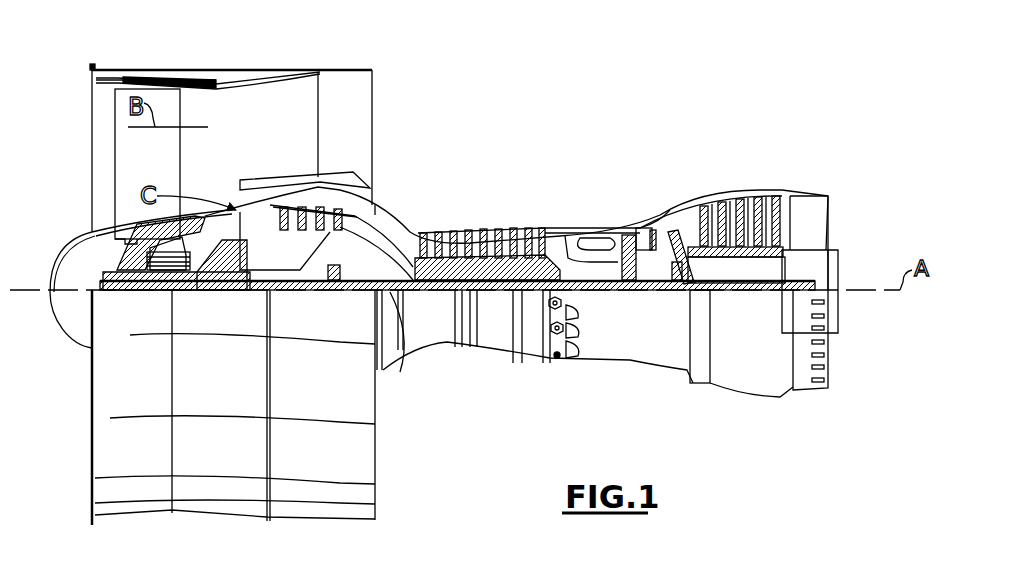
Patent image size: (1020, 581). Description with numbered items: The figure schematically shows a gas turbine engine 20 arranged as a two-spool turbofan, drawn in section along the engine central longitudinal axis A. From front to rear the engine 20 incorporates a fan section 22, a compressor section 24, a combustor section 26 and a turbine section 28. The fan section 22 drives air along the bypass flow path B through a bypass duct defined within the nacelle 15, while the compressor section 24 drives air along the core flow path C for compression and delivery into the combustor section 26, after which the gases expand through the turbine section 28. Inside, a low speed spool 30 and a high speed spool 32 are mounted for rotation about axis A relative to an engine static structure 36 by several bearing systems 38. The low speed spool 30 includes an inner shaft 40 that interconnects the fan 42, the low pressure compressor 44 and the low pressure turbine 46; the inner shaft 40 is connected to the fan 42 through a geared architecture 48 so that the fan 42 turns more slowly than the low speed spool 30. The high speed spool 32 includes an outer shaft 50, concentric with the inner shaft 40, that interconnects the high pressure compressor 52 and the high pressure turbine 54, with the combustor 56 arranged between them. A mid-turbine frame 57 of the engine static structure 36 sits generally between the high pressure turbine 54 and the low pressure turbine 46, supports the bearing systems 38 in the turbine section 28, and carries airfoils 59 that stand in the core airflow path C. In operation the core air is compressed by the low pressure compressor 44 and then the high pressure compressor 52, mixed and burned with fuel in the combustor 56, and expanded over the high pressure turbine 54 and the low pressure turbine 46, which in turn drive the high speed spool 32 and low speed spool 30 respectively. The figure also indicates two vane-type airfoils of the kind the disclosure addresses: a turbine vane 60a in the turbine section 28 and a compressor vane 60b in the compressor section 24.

The gas turbine engine 20 is at (600, 100).
The fan section 22 is at (180, 62).
The nacelle 15 is at (228, 70).
The compressor section 24 is at (414, 212).
The combustor section 26 is at (588, 212).
The turbine section 28 is at (706, 180).
The low speed spool 30 is at (498, 296).
The high speed spool 32 is at (545, 236).
The engine static structure 36 is at (532, 362).
The bearing systems 38 is at (343, 290).
The inner shaft 40 is at (400, 372).
The fan 42 is at (165, 169).
The low pressure compressor 44 is at (312, 222).
The low pressure turbine 46 is at (740, 210).
The geared architecture 48 is at (233, 290).
The outer shaft 50 is at (597, 282).
The high pressure compressor 52 is at (472, 236).
The high pressure turbine 54 is at (640, 232).
The combustor 56 is at (590, 238).
The mid-turbine frame 57 is at (678, 212).
The airfoils 59 is at (680, 240).
The turbine vane 60a is at (698, 220).
The compressor vane 60b is at (532, 237).